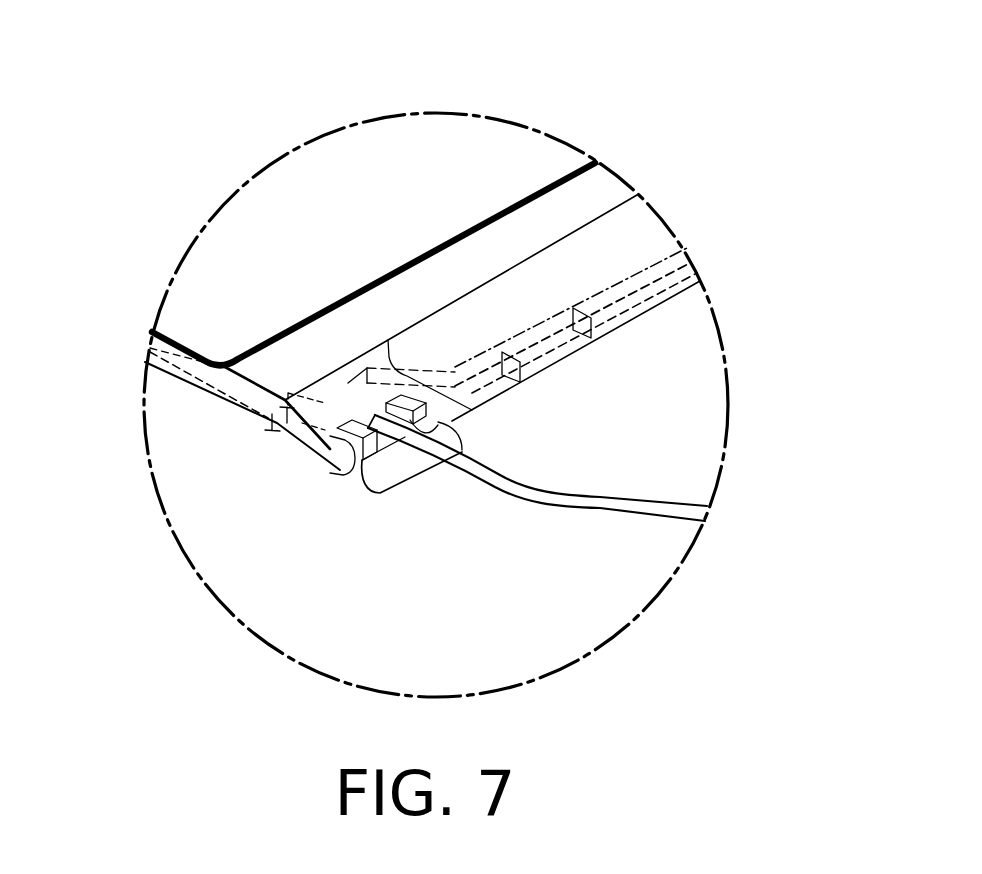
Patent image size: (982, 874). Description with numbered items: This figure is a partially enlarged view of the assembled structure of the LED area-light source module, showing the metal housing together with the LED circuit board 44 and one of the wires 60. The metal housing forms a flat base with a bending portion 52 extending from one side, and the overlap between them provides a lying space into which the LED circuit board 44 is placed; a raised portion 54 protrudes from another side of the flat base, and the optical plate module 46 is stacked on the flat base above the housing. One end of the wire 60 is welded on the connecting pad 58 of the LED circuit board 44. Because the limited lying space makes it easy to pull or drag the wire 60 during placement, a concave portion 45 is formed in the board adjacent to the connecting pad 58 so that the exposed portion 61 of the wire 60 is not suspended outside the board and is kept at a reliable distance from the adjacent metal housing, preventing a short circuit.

The LED circuit board 44 is at (343, 423).
The concave portion 45 is at (455, 426).
The optical plate module 46 is at (597, 190).
The bending portion 52 is at (645, 230).
The raised portion 54 is at (297, 437).
The connecting pad 58 is at (340, 410).
The wire 60 is at (490, 481).
The exposed portion 61 is at (353, 420).